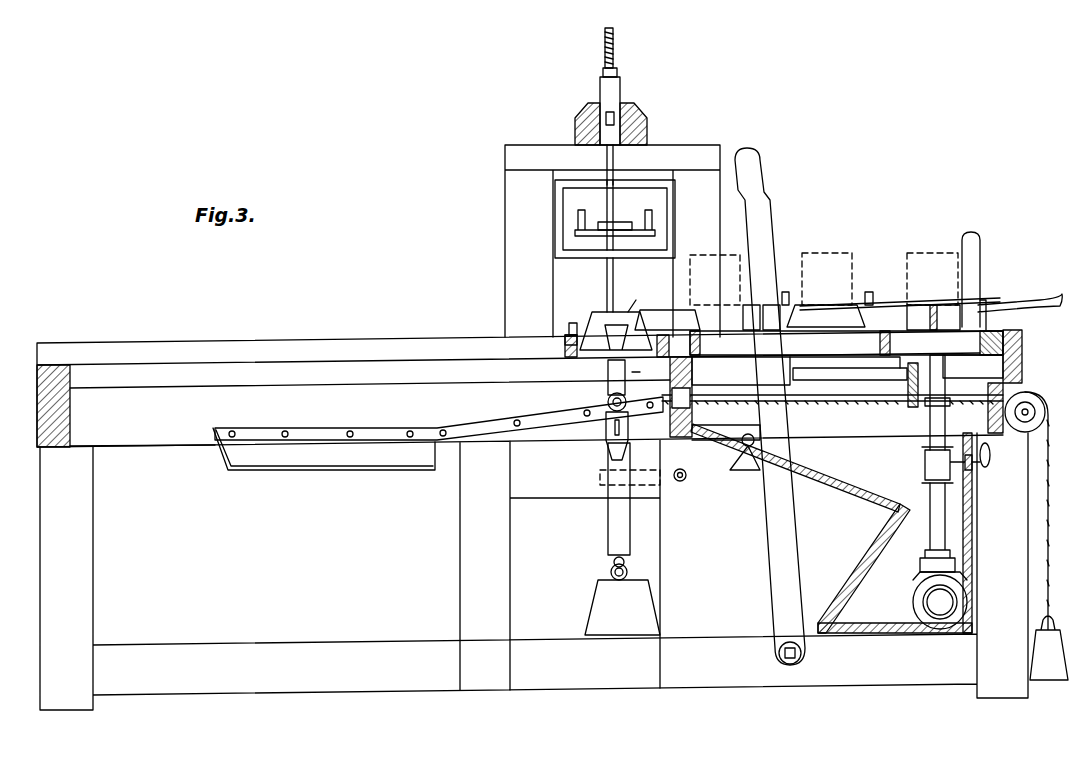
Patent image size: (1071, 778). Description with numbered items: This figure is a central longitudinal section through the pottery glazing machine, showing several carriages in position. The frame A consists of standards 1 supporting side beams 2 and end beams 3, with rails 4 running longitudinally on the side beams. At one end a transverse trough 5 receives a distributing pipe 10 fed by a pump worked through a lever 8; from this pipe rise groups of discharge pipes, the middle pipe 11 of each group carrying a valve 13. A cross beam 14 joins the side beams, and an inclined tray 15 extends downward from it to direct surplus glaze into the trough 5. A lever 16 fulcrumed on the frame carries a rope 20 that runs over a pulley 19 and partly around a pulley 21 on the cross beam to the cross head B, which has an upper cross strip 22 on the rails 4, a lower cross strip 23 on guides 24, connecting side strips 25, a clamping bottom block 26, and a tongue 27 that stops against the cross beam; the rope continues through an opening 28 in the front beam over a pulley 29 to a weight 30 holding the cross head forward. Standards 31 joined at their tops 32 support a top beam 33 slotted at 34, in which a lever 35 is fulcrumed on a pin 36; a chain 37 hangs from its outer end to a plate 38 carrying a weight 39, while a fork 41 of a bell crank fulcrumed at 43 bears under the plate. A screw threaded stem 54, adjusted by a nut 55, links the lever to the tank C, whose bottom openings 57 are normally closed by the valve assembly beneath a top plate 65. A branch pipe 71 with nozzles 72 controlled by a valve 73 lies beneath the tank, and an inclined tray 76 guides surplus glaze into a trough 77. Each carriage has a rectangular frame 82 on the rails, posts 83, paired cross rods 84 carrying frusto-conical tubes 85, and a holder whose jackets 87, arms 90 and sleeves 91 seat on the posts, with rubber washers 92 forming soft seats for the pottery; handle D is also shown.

The standards 1 is at (82, 530).
The side beams 2 is at (181, 450).
The end beams 3 is at (37, 428).
The rails 4 is at (284, 378).
The trough 5 is at (895, 533).
The lever 8 is at (890, 300).
The distributing pipe 10 is at (935, 615).
The middle pipe 11 is at (928, 530).
The valve 13 is at (988, 470).
The cross beam 14 is at (694, 444).
The inclined tray 15 is at (842, 492).
The lever 16 is at (770, 556).
The pulley 19 is at (766, 386).
The rope 20 is at (716, 410).
The pulley 21 is at (704, 362).
The upper cross strip 22 is at (1005, 333).
The lower cross strip 23 is at (895, 404).
The guides 24 is at (828, 408).
The side strips 25 is at (973, 366).
The bottom block 26 is at (928, 404).
The tongue 27 is at (845, 368).
The opening 28 is at (1022, 385).
The pulley 29 is at (1045, 410).
The weight 30 is at (1046, 536).
The standards 31 is at (505, 278).
The connection of standards 32 is at (696, 150).
The top beam 33 is at (636, 118).
The slot 34 is at (625, 100).
The lever 35 is at (600, 90).
The pin 36 is at (573, 126).
The chain 37 is at (614, 160).
The plate 38 is at (606, 526).
The weight 39 is at (622, 607).
The fork 41 is at (648, 482).
The fulcrum 43 is at (684, 479).
The screw threaded stem 54 is at (613, 50).
The nut 55 is at (617, 74).
The openings 57 is at (616, 268).
The top plate 65 is at (615, 228).
The branch pipe 71 is at (607, 400).
The nozzles 72 is at (608, 375).
The valve 73 is at (913, 385).
The inclined tray 76 is at (492, 424).
The trough 77 is at (316, 470).
The rectangular frame 82 is at (950, 333).
The posts 83 is at (573, 322).
The cross rods 84 is at (916, 318).
The frusto-conical tube 85 is at (640, 352).
The jacket 87 is at (564, 346).
The arms 90 is at (648, 328).
The sleeves 91 is at (562, 335).
The rubber washers 92 is at (630, 310).
The frame A is at (486, 575).
The cross head B is at (1022, 348).
The tank C is at (668, 207).
The handle D is at (1000, 296).